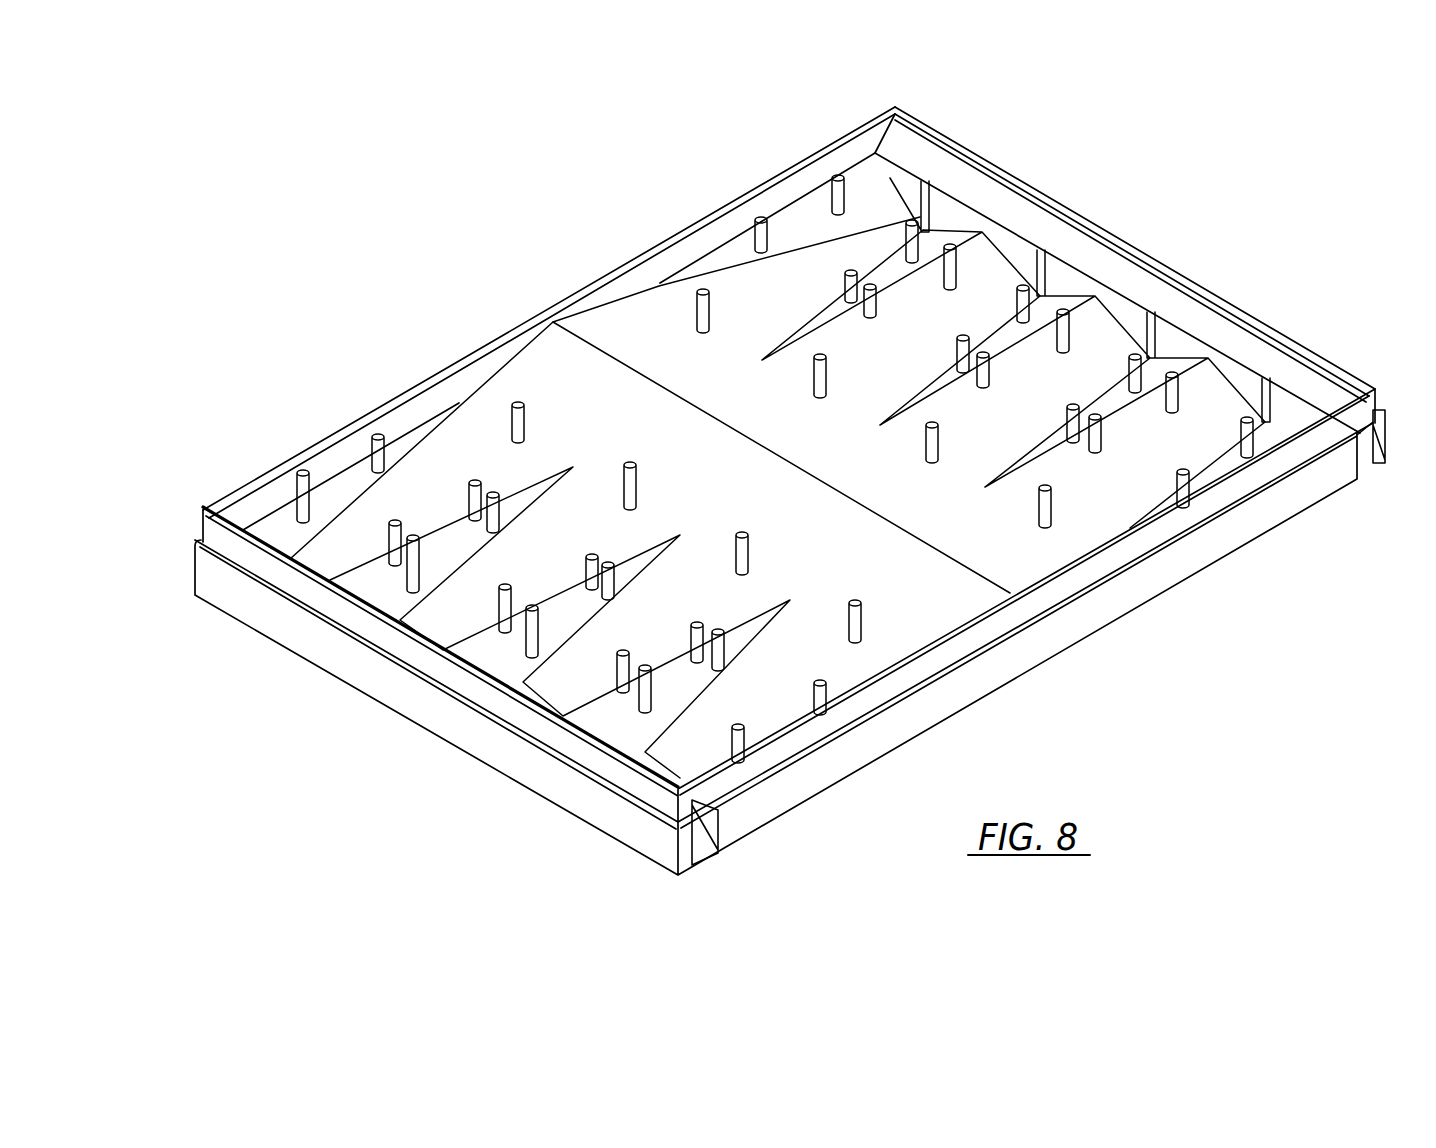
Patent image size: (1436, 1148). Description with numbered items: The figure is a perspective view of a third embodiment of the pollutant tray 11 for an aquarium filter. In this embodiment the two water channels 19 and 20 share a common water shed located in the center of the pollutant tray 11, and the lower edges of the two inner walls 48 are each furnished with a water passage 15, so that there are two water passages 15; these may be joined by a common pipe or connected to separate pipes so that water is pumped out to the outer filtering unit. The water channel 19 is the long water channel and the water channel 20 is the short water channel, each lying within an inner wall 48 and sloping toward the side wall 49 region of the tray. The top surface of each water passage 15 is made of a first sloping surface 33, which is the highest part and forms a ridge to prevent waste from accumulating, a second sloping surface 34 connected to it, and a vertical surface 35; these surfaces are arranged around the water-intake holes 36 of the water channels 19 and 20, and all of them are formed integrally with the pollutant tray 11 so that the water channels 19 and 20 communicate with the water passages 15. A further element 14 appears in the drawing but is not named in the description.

The pollutant tray 11 is at (1188, 562).
The tray frame 14 is at (1257, 488).
The water passage 15 is at (710, 833).
The long water channel 19 is at (842, 258).
The short water channel 20 is at (355, 523).
The first sloping surface 33 is at (1138, 282).
The second sloping surface 34 is at (1180, 333).
The vertical surface 35 is at (1010, 255).
The water-intake hole 36 is at (1270, 362).
The inner wall 48 is at (1090, 220).
The side wall 49 is at (685, 248).